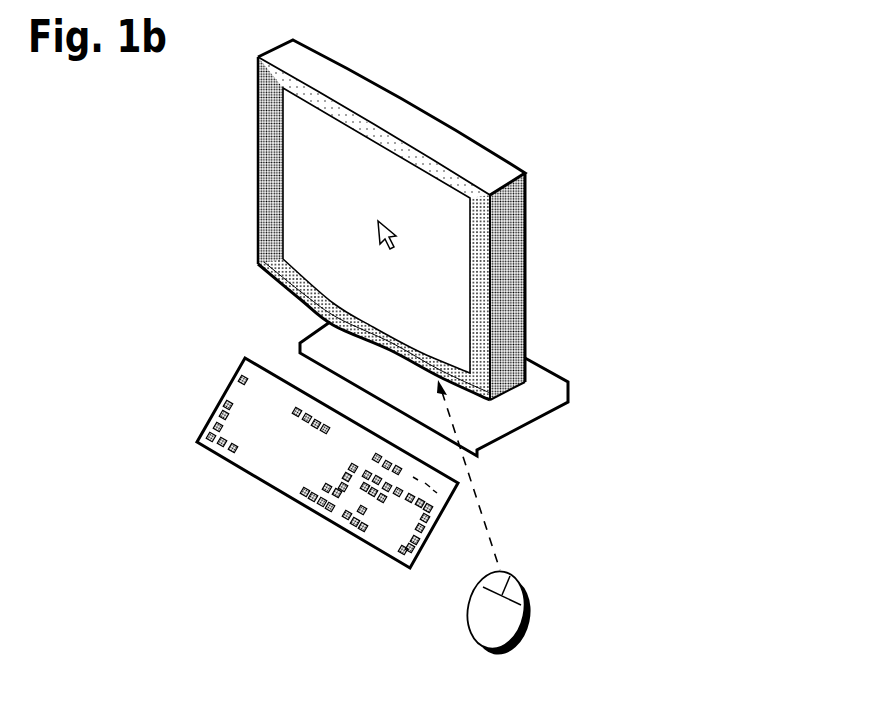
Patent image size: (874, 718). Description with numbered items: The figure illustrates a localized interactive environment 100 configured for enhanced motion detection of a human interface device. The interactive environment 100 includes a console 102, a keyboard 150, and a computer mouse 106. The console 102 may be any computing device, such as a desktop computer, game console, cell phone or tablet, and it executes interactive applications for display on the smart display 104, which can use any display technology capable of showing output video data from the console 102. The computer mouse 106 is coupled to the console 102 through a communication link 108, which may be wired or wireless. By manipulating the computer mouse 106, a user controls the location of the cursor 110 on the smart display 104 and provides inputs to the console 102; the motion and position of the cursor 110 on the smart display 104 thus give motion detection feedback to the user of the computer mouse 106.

The interactive environment 100 is at (720, 179).
The console 102 is at (502, 150).
The smart display 104 is at (320, 173).
The computer mouse 106 is at (530, 615).
The communication link 108 is at (478, 502).
The cursor 110 is at (375, 233).
The keyboard 150 is at (217, 403).